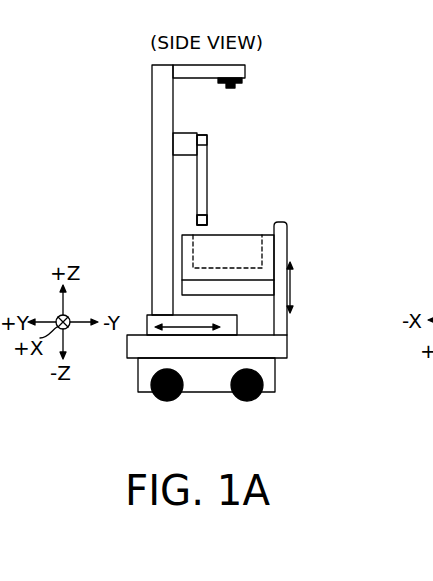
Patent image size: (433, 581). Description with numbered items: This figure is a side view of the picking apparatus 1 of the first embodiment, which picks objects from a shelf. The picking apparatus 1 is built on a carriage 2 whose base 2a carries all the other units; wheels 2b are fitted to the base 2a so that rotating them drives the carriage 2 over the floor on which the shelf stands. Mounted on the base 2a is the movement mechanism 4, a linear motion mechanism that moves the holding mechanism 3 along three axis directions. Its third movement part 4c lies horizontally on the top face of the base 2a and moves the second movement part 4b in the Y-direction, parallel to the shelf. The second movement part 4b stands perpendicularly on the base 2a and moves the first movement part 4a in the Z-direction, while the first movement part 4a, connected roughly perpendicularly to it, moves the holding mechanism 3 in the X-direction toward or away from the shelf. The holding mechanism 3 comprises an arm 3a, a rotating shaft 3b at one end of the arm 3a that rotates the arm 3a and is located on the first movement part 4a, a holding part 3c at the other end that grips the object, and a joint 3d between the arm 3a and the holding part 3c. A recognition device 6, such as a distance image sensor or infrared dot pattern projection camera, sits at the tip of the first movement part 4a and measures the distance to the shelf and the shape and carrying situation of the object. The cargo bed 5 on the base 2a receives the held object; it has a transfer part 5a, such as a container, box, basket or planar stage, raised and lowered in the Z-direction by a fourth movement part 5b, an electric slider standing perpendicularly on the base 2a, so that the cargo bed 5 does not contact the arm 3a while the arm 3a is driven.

The picking apparatus 1 is at (295, 43).
The carriage 2 is at (337, 330).
The base 2a is at (263, 352).
The wheels 2b is at (181, 378).
The holding mechanism 3 is at (295, 108).
The arm 3a is at (205, 170).
The rotating shaft 3b is at (202, 142).
The holding part 3c is at (202, 218).
The joint 3d is at (202, 220).
The movement mechanism 4 is at (102, 98).
The first movement part 4a is at (190, 143).
The second movement part 4b is at (167, 162).
The third movement part 4c is at (180, 315).
The cargo bed 5 is at (292, 215).
The transfer part 5a is at (215, 245).
The fourth movement part 5b is at (281, 258).
The recognition device 6 is at (243, 83).